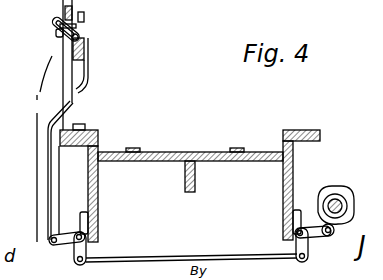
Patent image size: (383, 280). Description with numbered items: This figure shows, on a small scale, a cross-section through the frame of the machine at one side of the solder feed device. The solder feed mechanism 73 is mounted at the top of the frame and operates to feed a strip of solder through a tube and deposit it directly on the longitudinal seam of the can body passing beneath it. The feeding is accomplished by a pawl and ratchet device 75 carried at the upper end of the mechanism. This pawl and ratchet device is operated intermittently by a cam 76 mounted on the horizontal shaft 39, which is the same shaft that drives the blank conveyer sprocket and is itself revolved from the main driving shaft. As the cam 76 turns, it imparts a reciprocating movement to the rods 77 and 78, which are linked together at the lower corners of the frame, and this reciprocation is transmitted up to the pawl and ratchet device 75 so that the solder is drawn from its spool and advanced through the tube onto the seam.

The solder feed mechanism 73 is at (62, 13).
The pawl and ratchet device 75 is at (78, 40).
The rod 78 is at (59, 201).
The rod 77 is at (158, 256).
The cam 76 is at (327, 187).
The horizontal shaft 39 is at (339, 205).